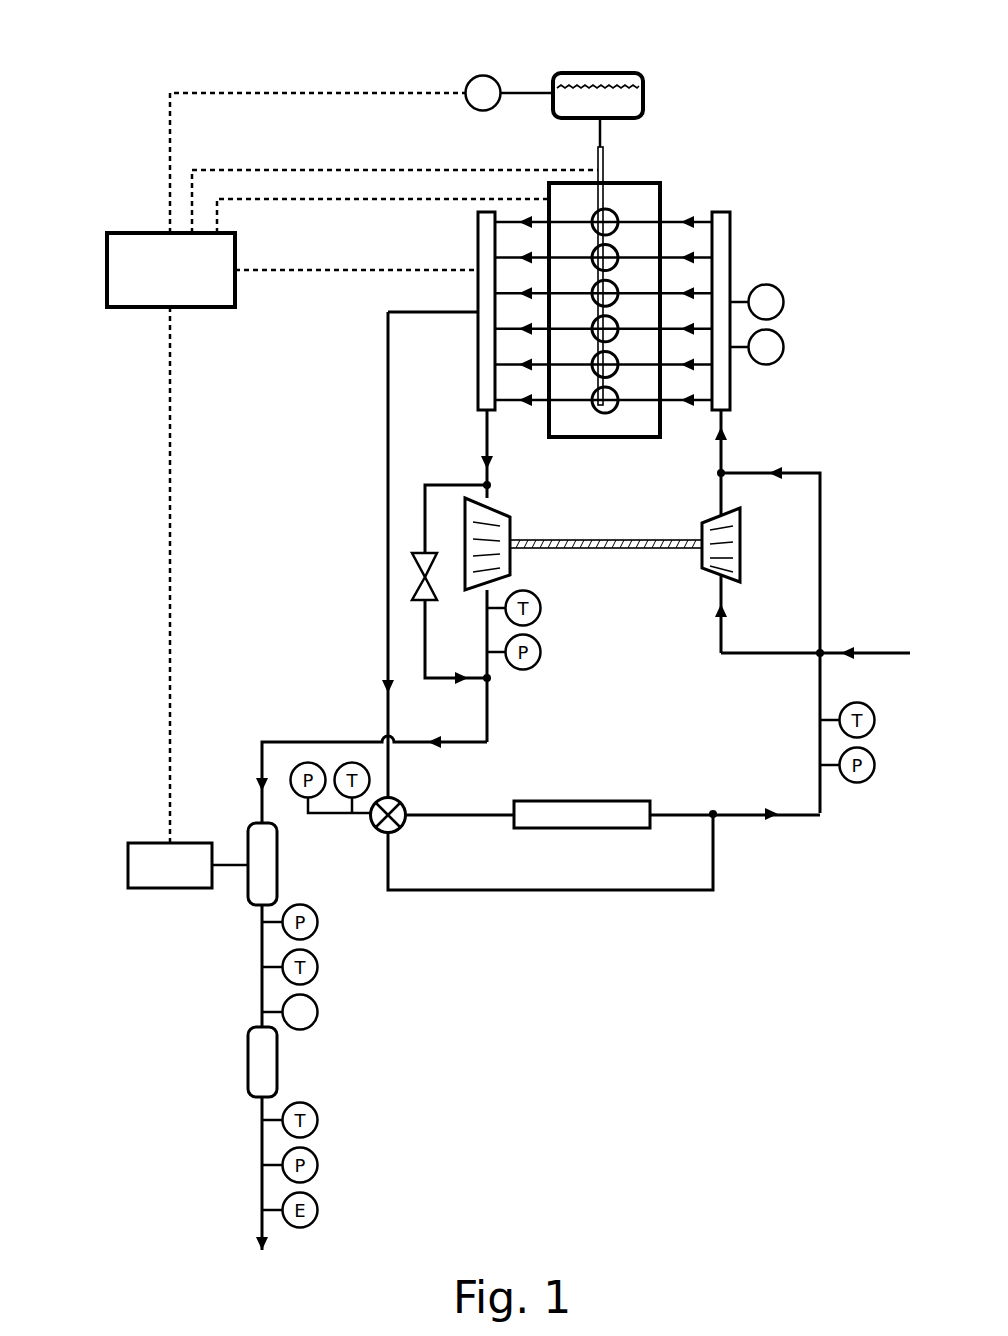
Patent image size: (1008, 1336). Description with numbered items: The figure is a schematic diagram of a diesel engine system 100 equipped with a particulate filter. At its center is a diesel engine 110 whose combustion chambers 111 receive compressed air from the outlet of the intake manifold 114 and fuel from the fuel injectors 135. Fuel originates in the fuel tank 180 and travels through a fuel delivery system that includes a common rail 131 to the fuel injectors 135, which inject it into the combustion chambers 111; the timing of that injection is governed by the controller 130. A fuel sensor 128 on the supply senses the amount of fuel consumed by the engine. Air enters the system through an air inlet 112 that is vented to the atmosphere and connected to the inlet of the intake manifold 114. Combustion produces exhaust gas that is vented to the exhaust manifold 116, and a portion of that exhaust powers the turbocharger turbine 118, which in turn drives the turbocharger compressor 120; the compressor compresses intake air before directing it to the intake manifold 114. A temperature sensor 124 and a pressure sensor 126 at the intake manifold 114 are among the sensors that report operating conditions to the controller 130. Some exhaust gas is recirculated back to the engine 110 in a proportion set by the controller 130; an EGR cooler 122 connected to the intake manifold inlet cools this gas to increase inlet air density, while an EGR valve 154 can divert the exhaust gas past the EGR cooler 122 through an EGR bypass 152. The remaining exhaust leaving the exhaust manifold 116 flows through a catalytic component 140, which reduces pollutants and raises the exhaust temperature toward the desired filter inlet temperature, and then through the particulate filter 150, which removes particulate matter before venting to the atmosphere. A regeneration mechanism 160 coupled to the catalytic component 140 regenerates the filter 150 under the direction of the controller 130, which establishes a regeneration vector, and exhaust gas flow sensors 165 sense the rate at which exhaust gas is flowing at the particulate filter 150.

The diesel engine system 100 is at (122, 70).
The diesel engine 110 is at (640, 183).
The combustion chambers 111 is at (603, 406).
The air inlet 112 is at (900, 653).
The intake manifold 114 is at (730, 241).
The exhaust manifold 116 is at (478, 236).
The turbocharger turbine 118 is at (510, 510).
The turbocharger compressor 120 is at (703, 521).
The EGR cooler 122 is at (597, 801).
The temperature sensors 124 is at (784, 303).
The pressure sensors 126 is at (784, 348).
The fuel sensor 128 is at (483, 75).
The controller 130 is at (352, 468).
The common rail 131 is at (598, 150).
The fuel injectors 135 is at (606, 222).
The catalytic component 140 is at (278, 874).
The particulate filter 150 is at (278, 1066).
The EGR bypass 152 is at (518, 890).
The EGR valve 154 is at (403, 826).
The regeneration mechanism 160 is at (188, 865).
The exhaust gas flow sensors 165 is at (318, 1011).
The fuel tank 180 is at (623, 73).